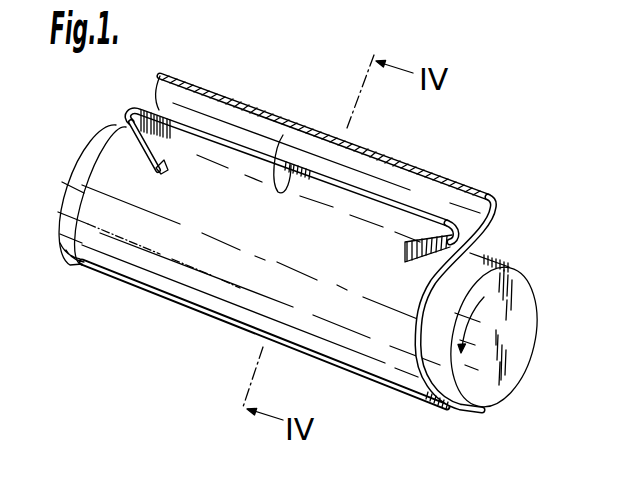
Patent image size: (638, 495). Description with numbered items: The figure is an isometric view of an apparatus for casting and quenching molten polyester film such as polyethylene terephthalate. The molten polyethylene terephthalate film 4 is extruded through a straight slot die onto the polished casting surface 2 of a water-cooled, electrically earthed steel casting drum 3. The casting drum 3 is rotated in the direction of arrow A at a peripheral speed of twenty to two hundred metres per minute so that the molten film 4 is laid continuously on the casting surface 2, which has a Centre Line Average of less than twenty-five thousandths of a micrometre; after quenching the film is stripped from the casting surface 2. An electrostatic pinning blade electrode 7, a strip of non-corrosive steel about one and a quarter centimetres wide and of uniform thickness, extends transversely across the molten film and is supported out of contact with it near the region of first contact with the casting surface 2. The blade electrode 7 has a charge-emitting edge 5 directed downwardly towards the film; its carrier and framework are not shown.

The polished casting surface 2 is at (88, 147).
The casting drum 3 is at (526, 303).
The molten polyethylene terephthalate film 4 is at (154, 240).
The charge-emitting edge 5 is at (284, 146).
The electrostatic pinning blade electrode 7 is at (162, 78).